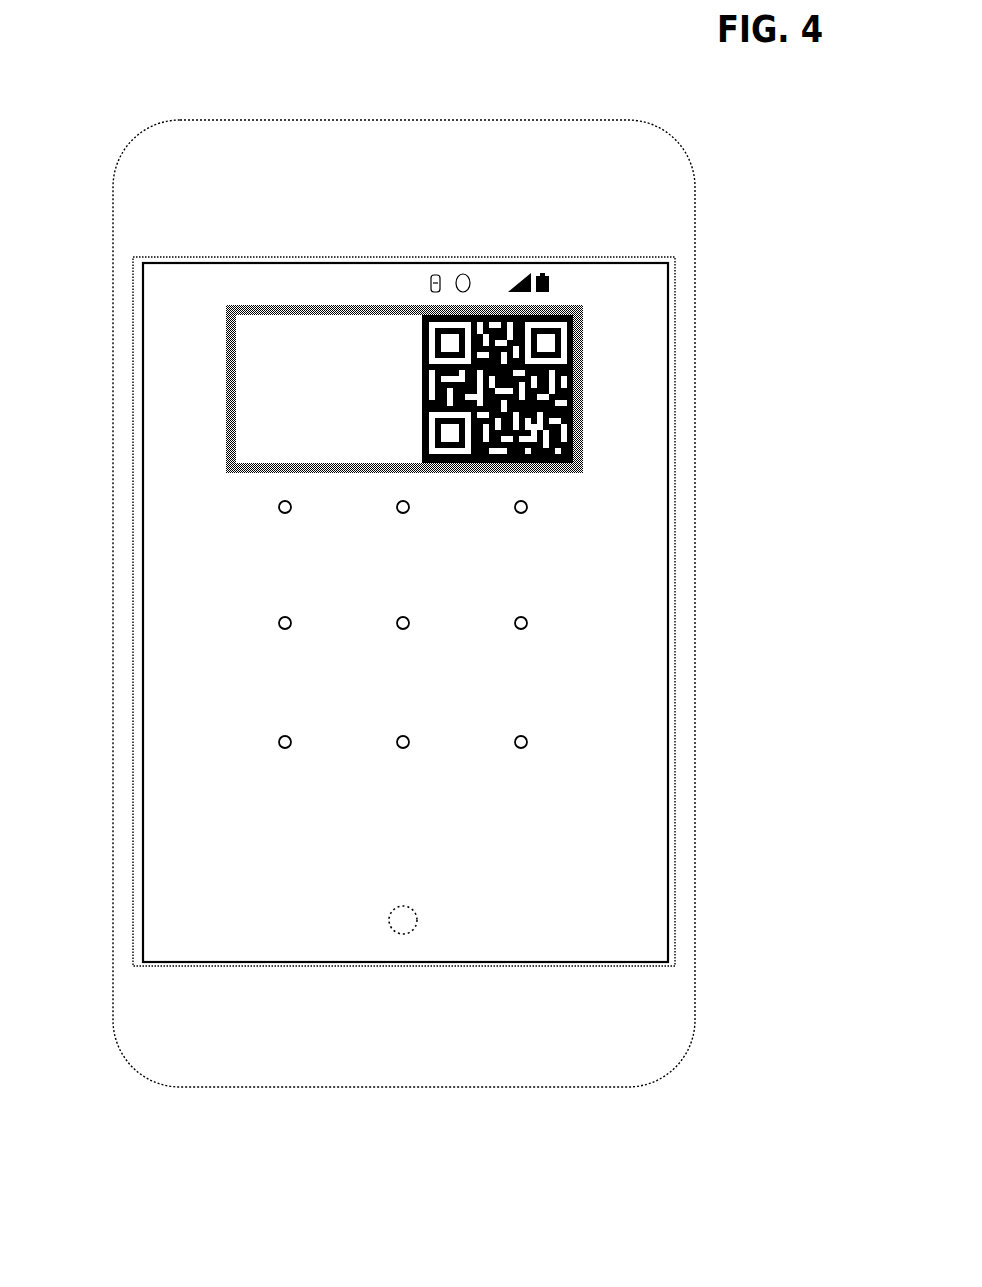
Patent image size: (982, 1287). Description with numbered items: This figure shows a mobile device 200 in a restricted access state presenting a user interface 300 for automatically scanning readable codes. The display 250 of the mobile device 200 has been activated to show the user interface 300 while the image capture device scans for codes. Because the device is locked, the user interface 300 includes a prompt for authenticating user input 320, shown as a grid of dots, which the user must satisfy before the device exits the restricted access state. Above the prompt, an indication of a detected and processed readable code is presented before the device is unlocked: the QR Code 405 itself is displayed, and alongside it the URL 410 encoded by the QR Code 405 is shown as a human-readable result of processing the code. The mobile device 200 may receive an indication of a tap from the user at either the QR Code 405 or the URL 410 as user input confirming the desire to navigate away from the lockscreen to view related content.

The mobile device 200 is at (700, 1012).
The display 250 is at (176, 963).
The user interface 300 is at (175, 881).
The prompt for authenticating user input 320 is at (546, 613).
The QR Code 405 is at (581, 403).
The URL 410 is at (232, 352).